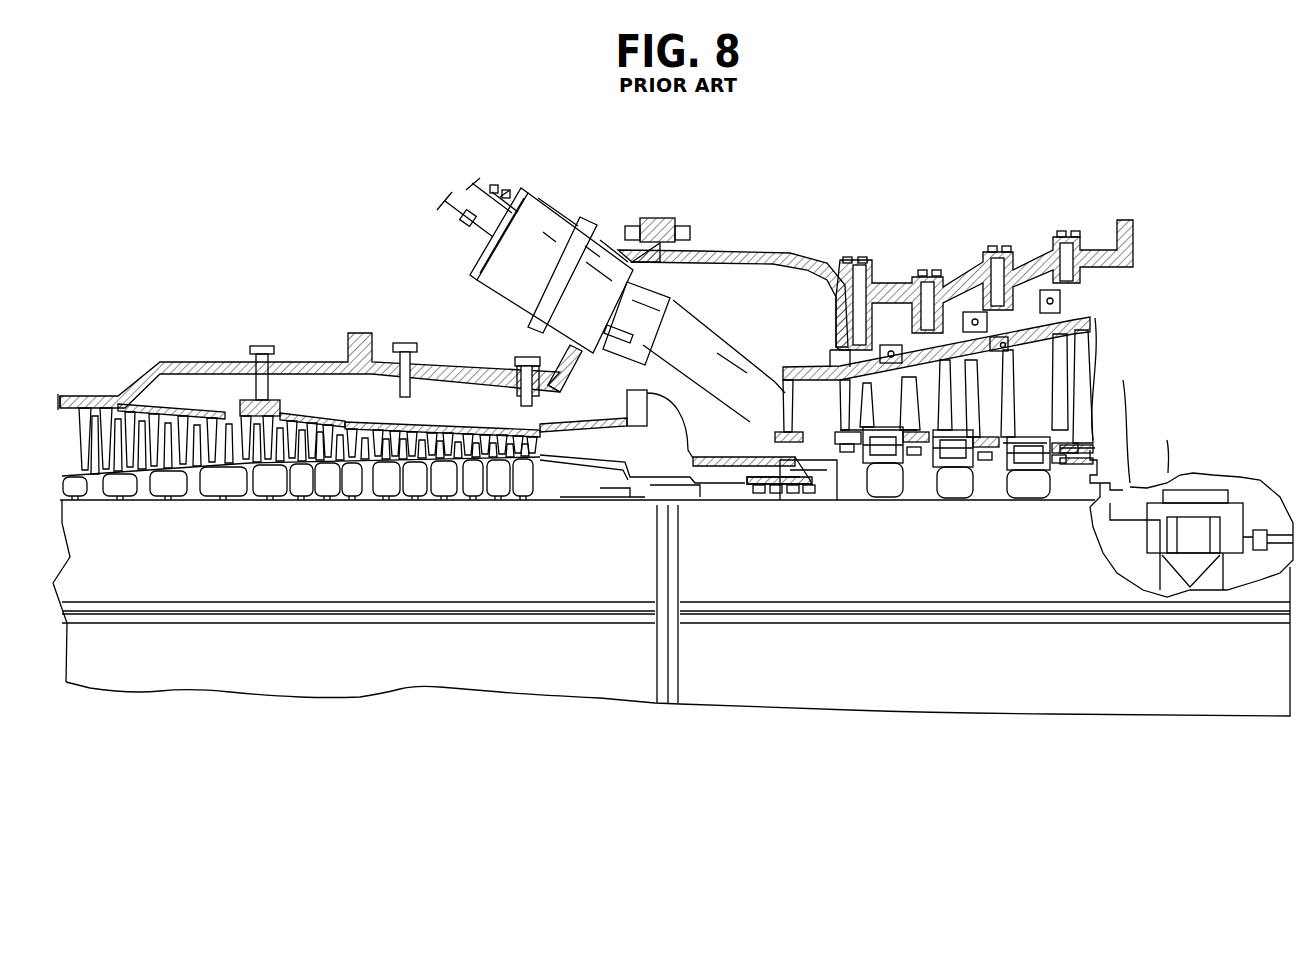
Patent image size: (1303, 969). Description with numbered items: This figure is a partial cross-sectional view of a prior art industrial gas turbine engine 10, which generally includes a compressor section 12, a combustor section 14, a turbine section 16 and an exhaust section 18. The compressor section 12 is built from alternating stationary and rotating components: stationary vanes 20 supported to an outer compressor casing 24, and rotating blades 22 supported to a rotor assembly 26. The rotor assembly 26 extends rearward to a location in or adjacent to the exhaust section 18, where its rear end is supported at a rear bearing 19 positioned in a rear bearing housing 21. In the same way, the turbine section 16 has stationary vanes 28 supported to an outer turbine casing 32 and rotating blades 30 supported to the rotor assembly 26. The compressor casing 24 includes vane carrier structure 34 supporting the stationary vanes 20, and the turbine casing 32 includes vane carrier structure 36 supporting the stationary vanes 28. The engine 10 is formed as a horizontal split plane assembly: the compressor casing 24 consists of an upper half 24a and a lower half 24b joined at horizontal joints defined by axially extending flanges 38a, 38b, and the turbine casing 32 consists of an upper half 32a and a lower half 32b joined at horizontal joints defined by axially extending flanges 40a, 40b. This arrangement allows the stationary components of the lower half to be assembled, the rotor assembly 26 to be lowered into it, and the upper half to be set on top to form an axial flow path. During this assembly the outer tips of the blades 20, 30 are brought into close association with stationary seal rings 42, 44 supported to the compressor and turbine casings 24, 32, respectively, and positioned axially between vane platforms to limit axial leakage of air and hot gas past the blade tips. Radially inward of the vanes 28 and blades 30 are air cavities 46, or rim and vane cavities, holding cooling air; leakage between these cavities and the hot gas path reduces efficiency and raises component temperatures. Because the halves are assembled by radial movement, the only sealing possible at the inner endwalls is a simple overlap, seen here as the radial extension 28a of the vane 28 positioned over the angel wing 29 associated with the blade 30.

The industrial gas turbine engine 10 is at (322, 216).
The compressor section 12 is at (278, 337).
The combustor section 14 is at (616, 220).
The turbine section 16 is at (884, 243).
The exhaust section 18 is at (1142, 210).
The rear bearing 19 is at (1190, 563).
The stationary vanes 20 is at (292, 430).
The rear bearing housing 21 is at (1177, 500).
The rotating blades 22 is at (330, 428).
The outer compressor casing 24 is at (160, 360).
The upper half 24a is at (118, 558).
The lower half 24b is at (106, 645).
The rotor assembly 26 is at (527, 486).
The stationary vanes 28 is at (865, 402).
The radial extension 28a is at (978, 430).
The angel wing 29 is at (977, 432).
The rotating blades 30 is at (920, 398).
The outer turbine casing 32 is at (922, 290).
The upper half 32a is at (758, 573).
The lower half 32b is at (833, 688).
The vane carrier structure 34 is at (393, 410).
The vane carrier structure 36 is at (960, 297).
The axially extending flange 38a is at (320, 598).
The axially extending flange 38b is at (220, 620).
The axially extending flange 40a is at (947, 600).
The axially extending flange 40b is at (985, 625).
The stationary seal ring 42 is at (470, 445).
The stationary seal ring 44 is at (928, 288).
The air cavities 46 is at (866, 438).